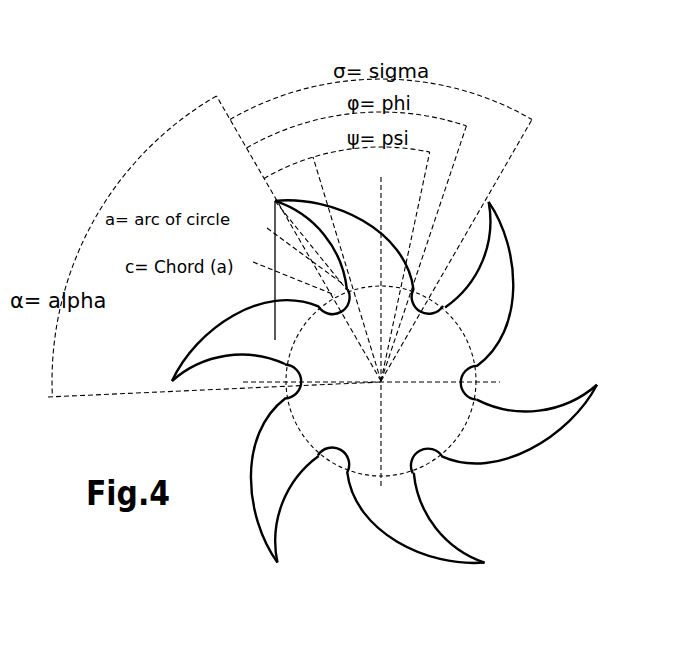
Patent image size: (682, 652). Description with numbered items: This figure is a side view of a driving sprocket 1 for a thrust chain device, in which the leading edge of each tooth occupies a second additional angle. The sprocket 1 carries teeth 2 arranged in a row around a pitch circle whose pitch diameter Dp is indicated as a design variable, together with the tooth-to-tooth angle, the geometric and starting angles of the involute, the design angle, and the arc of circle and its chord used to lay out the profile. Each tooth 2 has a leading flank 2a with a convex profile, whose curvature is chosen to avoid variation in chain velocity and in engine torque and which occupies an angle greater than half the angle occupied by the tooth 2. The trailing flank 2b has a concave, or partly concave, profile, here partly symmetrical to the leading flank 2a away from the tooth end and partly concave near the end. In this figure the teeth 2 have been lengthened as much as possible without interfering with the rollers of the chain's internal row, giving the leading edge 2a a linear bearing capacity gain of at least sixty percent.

The sprocket 1 is at (393, 380).
The tooth 2 is at (513, 410).
The leading flank 2a is at (567, 427).
The trailing flank 2b is at (537, 410).
The pitch diameter of the sprocket Dp is at (381, 381).